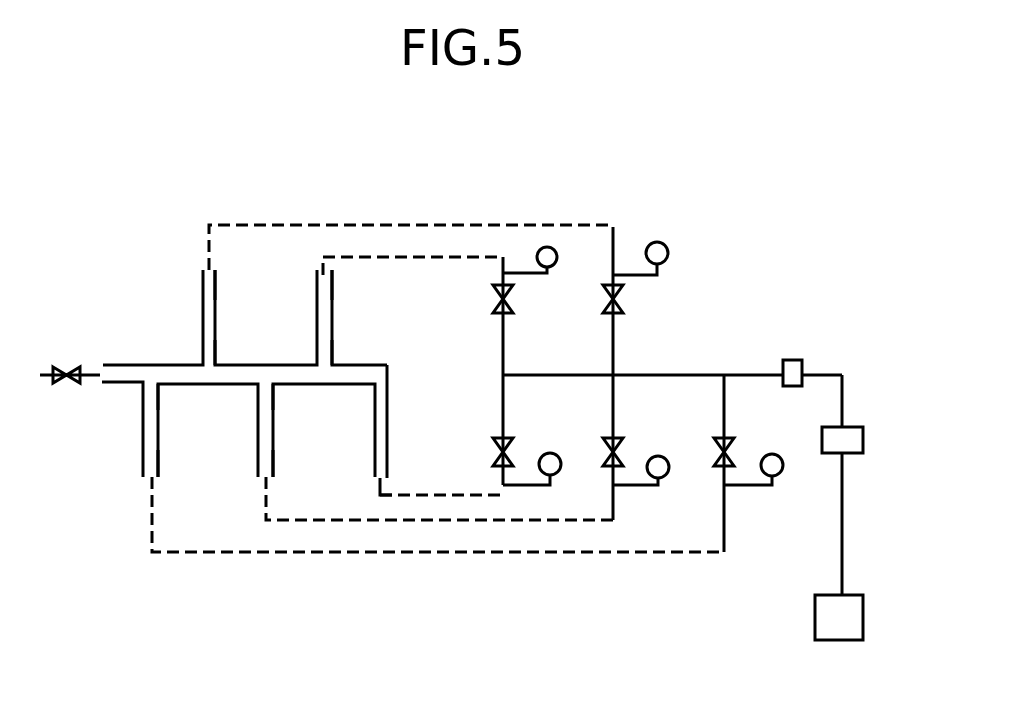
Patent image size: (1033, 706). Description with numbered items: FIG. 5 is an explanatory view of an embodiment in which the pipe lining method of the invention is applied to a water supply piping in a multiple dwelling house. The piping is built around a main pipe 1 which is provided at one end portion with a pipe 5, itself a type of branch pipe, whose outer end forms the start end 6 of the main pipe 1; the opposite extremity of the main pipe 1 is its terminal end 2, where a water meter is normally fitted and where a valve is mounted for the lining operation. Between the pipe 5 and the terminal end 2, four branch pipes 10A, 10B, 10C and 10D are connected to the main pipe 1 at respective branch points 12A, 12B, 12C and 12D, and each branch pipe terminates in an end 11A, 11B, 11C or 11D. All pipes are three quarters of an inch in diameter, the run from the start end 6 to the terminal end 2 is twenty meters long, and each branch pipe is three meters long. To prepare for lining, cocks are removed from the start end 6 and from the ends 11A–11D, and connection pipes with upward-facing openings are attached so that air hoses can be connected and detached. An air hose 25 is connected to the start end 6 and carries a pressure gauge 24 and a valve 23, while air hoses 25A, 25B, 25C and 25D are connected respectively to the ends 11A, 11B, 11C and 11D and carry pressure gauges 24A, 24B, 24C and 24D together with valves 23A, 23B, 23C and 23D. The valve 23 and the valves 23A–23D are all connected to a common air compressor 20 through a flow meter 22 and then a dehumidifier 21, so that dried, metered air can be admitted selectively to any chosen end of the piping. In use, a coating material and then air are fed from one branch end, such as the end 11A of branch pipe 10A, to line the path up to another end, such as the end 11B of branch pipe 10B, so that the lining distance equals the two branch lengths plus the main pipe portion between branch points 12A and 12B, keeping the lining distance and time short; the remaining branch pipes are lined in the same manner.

The main pipe 1 is at (158, 350).
The terminal end 2 is at (98, 380).
The pipe 5 is at (389, 418).
The start end 6 is at (390, 477).
The branch pipe 10A is at (333, 318).
The branch pipe 10B is at (275, 440).
The branch pipe 10C is at (217, 305).
The branch pipe 10D is at (160, 440).
The end 11A is at (334, 268).
The end 11B is at (267, 478).
The end 11C is at (212, 268).
The end 11D is at (153, 478).
The branch point 12A is at (334, 362).
The branch point 12B is at (275, 387).
The branch point 12C is at (222, 362).
The branch point 12D is at (162, 387).
The air compressor 20 is at (850, 595).
The dehumidifier 21 is at (852, 425).
The flow meter 22 is at (793, 360).
The valve 23 is at (508, 450).
The valve 23A is at (513, 310).
The valve 23B is at (617, 442).
The valve 23C is at (622, 303).
The valve 23D is at (732, 445).
The pressure gauge 24 is at (555, 453).
The pressure gauge 24A is at (550, 246).
The pressure gauge 24B is at (668, 477).
The pressure gauge 24C is at (660, 242).
The pressure gauge 24D is at (778, 480).
The air hose 25 is at (465, 495).
The air hose 25A is at (408, 258).
The air hose 25B is at (392, 522).
The air hose 25C is at (323, 225).
The air hose 25D is at (248, 552).